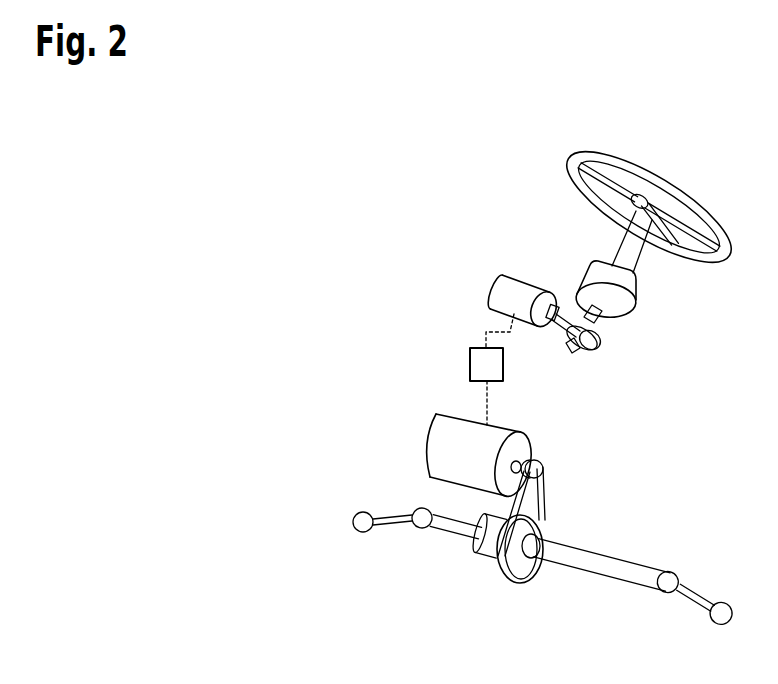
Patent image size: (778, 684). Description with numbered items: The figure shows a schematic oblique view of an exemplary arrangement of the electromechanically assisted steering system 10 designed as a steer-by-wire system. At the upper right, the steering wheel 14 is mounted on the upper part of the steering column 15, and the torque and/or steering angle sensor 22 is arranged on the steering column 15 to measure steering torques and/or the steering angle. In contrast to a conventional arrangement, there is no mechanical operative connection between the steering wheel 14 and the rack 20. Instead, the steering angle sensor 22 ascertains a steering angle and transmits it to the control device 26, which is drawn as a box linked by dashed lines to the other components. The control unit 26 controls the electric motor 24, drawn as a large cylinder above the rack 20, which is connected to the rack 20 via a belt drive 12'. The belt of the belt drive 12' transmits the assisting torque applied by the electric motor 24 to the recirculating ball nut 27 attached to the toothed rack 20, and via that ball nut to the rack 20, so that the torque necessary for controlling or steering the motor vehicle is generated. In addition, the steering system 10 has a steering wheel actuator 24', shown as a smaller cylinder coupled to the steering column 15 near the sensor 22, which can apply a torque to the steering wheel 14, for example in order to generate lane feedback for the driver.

The steering system 10 is at (486, 156).
The steering wheel 14 is at (684, 207).
The steering column 15 is at (642, 250).
The torque and/or steering angle sensor 22 is at (620, 293).
The steering wheel actuator 24' is at (490, 282).
The control device 26 is at (468, 362).
The electric motor 24 is at (437, 451).
The belt drive 12' is at (578, 510).
The recirculating ball nut 27 is at (486, 545).
The rack 20 is at (646, 577).